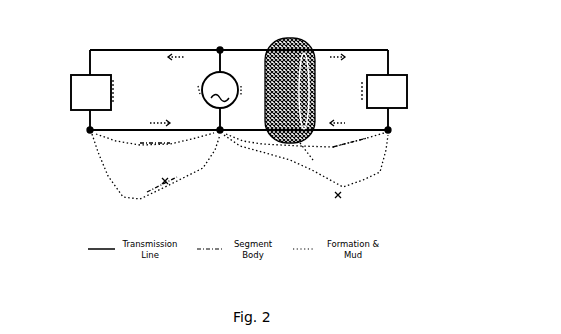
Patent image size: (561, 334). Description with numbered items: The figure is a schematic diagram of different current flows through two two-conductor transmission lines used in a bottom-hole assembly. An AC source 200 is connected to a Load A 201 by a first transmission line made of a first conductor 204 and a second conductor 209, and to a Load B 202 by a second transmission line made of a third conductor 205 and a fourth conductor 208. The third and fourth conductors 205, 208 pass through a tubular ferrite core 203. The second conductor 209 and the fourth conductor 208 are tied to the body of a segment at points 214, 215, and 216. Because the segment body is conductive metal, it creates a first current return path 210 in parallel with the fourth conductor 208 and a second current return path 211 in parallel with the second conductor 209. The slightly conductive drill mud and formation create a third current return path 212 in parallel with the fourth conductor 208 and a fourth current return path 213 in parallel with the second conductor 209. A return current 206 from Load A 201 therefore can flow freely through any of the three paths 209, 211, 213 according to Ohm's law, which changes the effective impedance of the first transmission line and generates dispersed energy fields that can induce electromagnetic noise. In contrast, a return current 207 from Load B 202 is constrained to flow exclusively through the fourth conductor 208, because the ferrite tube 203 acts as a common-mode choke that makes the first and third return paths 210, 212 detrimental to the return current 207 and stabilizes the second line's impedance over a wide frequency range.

The AC source 200 is at (210, 67).
The Load A 201 is at (75, 72).
The Load B 202 is at (391, 71).
The tubular ferrite core 203 is at (325, 36).
The first conductor 204 is at (183, 40).
The third conductor 205 is at (241, 41).
The return current 206 is at (115, 95).
The return current 207 is at (359, 100).
The fourth conductor 208 is at (260, 136).
The second conductor 209 is at (129, 134).
The first current return path 210 is at (312, 145).
The second current return path 211 is at (140, 150).
The third current return path 212 is at (344, 187).
The fourth current return path 213 is at (180, 182).
The tie point 214 is at (220, 135).
The tie point 215 is at (393, 137).
The tie point 216 is at (86, 135).